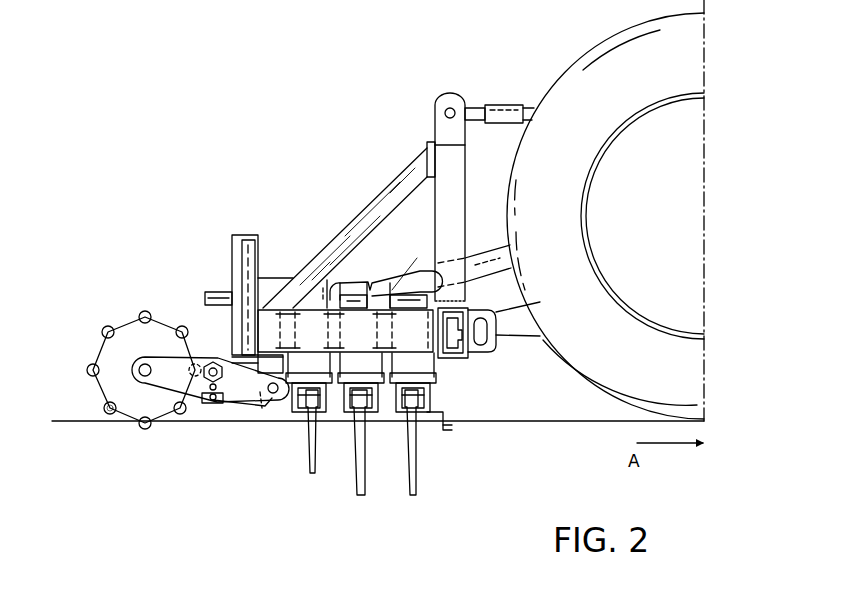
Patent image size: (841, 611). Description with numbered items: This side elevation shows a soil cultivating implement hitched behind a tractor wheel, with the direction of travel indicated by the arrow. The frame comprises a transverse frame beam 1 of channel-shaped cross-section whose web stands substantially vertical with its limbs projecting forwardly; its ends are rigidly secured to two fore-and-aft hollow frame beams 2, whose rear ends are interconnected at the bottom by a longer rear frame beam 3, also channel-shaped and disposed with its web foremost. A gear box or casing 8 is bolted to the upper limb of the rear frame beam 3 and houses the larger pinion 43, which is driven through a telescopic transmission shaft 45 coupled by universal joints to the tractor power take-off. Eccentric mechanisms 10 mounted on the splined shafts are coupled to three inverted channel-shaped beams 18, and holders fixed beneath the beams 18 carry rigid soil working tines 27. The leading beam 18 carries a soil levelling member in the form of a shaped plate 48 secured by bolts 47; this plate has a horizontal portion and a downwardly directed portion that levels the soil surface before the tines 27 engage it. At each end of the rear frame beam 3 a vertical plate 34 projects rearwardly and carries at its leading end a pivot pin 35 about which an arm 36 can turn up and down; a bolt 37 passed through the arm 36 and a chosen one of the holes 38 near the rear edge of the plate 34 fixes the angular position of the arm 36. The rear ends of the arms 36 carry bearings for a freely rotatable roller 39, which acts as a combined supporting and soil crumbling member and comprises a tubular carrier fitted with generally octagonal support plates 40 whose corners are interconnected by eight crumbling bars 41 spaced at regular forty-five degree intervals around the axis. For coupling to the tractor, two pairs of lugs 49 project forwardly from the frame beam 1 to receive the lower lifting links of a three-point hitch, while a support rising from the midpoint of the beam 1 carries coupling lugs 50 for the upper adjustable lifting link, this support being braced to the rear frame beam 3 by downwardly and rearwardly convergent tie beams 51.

The frame beam 1 is at (462, 362).
The frame beams 2 is at (362, 300).
The frame beam 3 is at (262, 408).
The gear box or casing 8 is at (252, 232).
The eccentric mechanisms 10 is at (297, 276).
The beams 18 is at (396, 415).
The soil working tine 27 is at (353, 468).
The plates 34 is at (250, 406).
The pivot pins 35 is at (276, 395).
The arms 36 is at (162, 360).
The bolts 37 is at (213, 361).
The holes 38 is at (224, 404).
The roller 39 is at (140, 426).
The support plates 40 is at (100, 350).
The crumbling bars 41 is at (106, 408).
The pinion 43 is at (253, 254).
The telescopic transmission shaft 45 is at (497, 262).
The bolts 47 is at (432, 410).
The shaped plate 48 is at (452, 430).
The lugs 49 is at (497, 342).
The coupling lugs 50 is at (433, 101).
The tie beams 51 is at (383, 200).